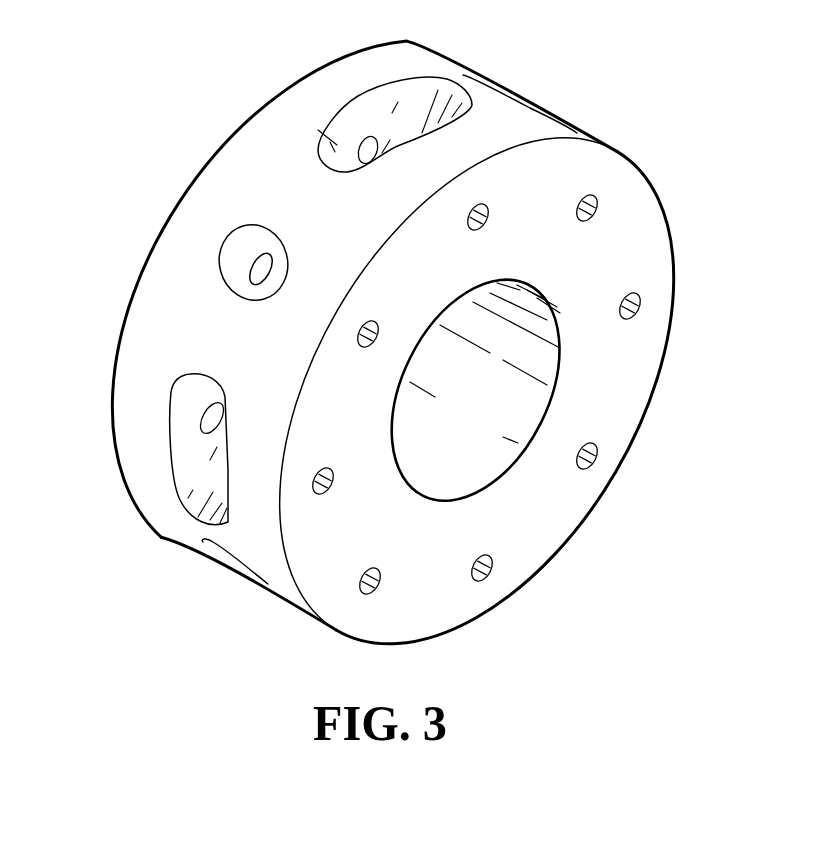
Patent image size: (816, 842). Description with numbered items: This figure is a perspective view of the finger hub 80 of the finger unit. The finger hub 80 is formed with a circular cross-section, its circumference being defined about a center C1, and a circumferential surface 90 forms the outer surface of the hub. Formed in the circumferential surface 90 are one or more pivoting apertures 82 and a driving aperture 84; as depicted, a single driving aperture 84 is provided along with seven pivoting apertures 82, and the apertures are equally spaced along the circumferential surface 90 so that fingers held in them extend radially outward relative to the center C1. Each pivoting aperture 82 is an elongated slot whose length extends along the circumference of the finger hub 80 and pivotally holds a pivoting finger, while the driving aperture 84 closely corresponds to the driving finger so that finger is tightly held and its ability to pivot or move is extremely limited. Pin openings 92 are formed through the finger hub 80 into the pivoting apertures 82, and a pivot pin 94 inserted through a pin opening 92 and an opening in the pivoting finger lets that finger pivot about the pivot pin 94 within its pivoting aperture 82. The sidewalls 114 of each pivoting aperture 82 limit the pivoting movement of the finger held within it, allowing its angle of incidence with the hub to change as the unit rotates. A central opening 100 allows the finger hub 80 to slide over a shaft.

The finger hub 80 is at (573, 163).
The pivoting aperture 82 is at (463, 75).
The driving aperture 84 is at (236, 230).
The circumferential surface 90 is at (347, 221).
The pin opening 92 is at (380, 152).
The pivot pin 94 is at (257, 270).
The central opening 100 is at (550, 407).
The sidewall of pivoting aperture 114 is at (333, 153).
The center C1 is at (463, 410).